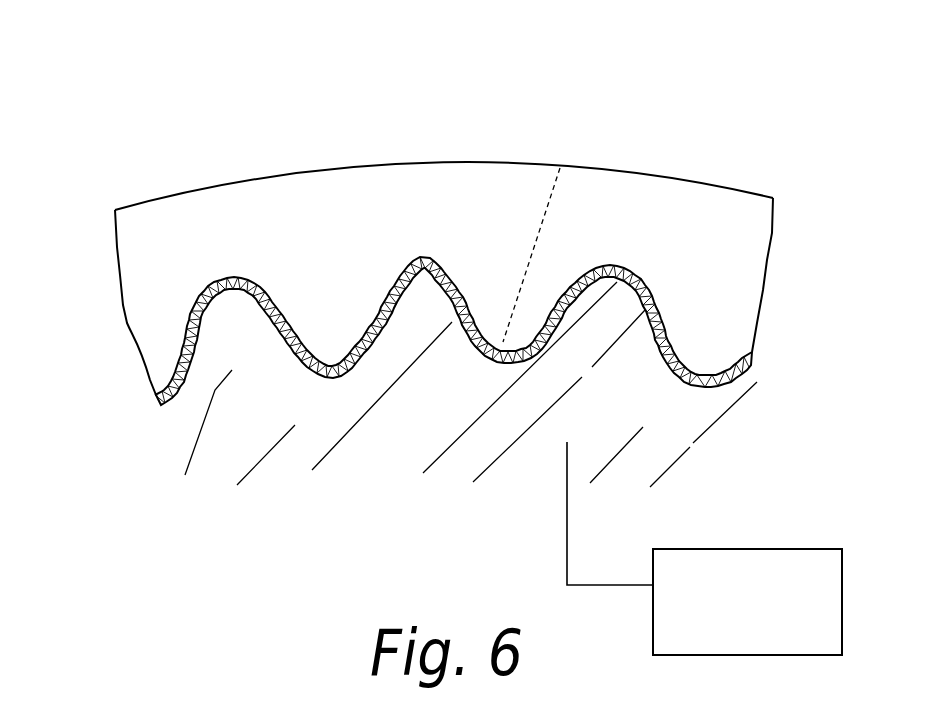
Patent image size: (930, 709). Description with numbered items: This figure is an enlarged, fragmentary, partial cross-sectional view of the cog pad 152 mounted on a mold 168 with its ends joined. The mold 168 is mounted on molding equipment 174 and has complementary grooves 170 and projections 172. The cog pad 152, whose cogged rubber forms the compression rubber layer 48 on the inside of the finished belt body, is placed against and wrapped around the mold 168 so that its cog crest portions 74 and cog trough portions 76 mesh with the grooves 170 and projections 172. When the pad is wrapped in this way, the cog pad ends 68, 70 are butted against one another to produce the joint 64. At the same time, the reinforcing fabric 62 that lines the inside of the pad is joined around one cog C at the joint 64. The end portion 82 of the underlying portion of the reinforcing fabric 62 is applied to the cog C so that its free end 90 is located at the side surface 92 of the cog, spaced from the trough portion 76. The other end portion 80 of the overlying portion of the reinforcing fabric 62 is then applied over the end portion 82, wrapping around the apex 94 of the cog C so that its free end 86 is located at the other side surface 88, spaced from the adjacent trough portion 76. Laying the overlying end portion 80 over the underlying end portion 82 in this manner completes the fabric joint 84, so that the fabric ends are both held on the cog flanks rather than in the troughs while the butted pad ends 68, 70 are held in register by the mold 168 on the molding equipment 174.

The compression rubber layer 48 is at (670, 222).
The cog crest portions 74 is at (712, 310).
The free end 86 is at (250, 293).
The other side surface 88 is at (276, 326).
The other end portion of the overlying portion of the reinforcing fabric 80 is at (296, 359).
The cog C is at (332, 317).
The joint 84 is at (332, 378).
The apex 94 is at (351, 381).
The side surface 92 is at (386, 310).
The cog pad 152 is at (122, 307).
The cog trough portions 76 is at (225, 230).
The end portion of the underlying portion of the reinforcing fabric 82 is at (378, 305).
The free end 90 is at (383, 313).
The cog pad end 68 is at (525, 282).
The joint 64 is at (563, 165).
The cog pad end 70 is at (530, 355).
The grooves 170 is at (538, 240).
The projections 172 is at (633, 272).
The second reinforcing fabric layer 62 is at (655, 338).
The mold 168 is at (645, 412).
The molding equipment 174 is at (728, 650).